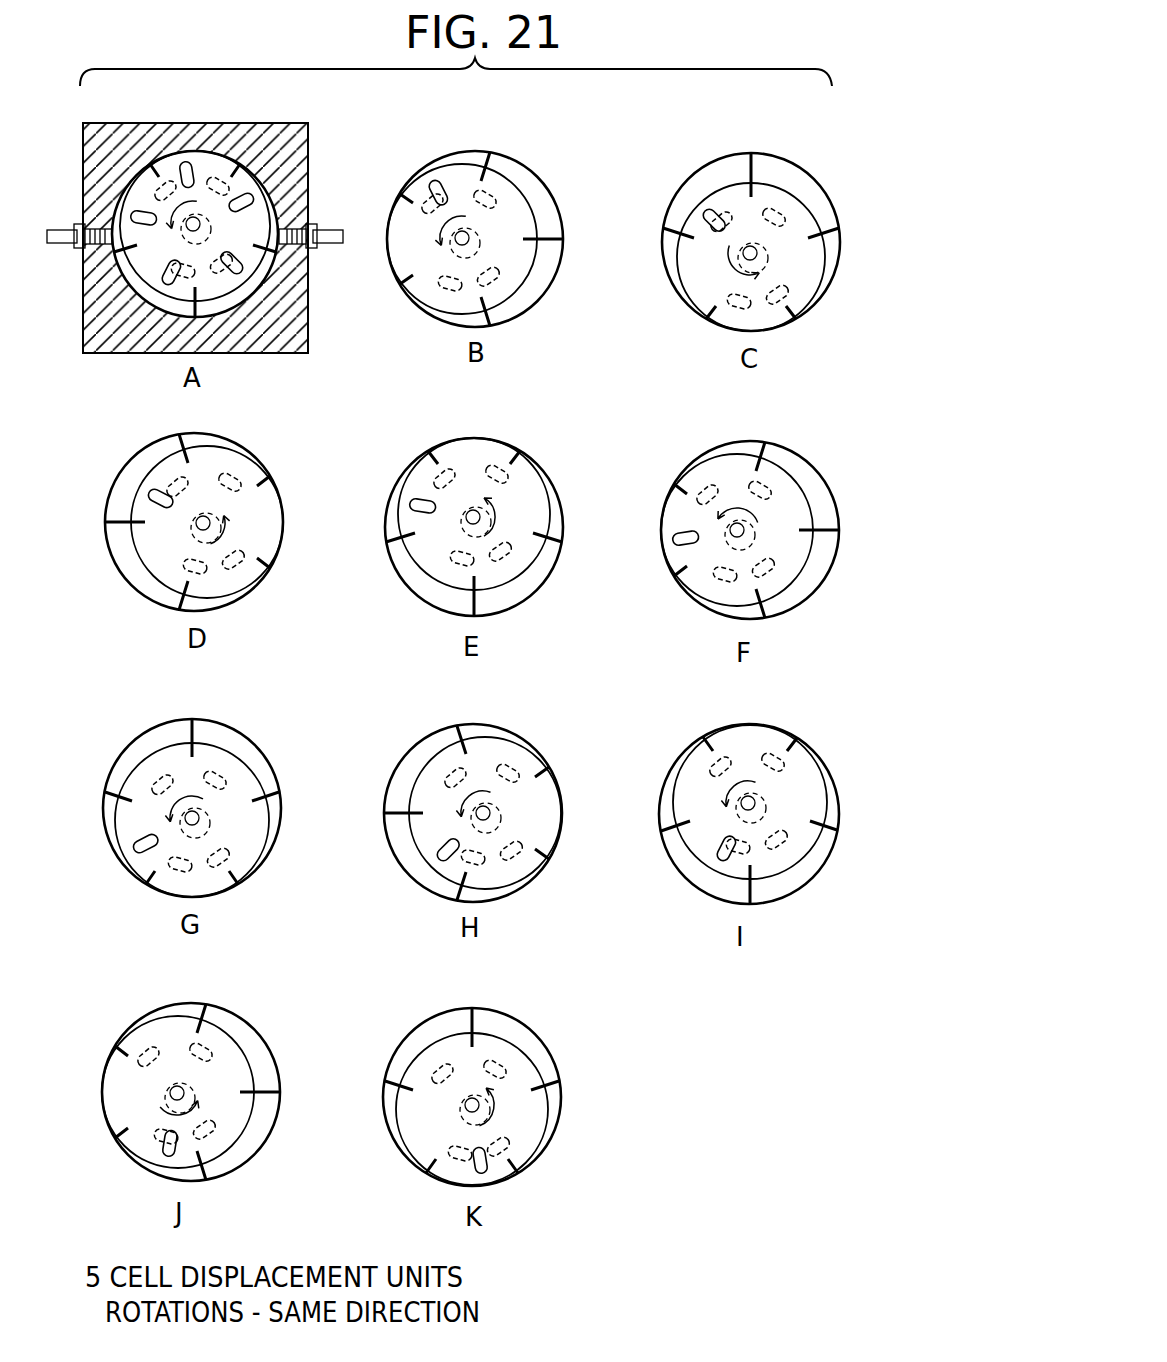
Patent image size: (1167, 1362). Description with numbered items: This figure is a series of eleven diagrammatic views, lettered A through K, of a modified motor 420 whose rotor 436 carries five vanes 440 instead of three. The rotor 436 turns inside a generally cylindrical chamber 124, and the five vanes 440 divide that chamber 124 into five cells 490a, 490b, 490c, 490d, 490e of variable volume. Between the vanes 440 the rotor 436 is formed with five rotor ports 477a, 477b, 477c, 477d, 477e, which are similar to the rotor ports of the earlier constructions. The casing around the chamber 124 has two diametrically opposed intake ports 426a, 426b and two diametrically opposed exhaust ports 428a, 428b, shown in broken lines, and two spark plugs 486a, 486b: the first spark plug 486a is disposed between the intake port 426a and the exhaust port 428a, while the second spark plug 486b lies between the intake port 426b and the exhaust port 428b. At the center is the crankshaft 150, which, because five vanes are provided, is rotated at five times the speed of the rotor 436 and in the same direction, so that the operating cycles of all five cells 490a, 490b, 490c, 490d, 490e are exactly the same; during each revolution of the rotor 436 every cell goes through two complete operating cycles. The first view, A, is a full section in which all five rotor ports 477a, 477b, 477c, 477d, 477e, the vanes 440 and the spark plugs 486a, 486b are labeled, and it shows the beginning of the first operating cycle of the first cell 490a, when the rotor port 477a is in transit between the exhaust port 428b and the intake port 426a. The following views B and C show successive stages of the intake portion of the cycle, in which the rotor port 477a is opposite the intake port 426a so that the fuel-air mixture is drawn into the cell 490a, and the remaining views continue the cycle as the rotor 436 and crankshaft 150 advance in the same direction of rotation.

The motor 420 is at (72, 85).
The chamber 124 is at (512, 312).
The crankshaft 150 is at (474, 236).
The intake port 426a is at (160, 185).
The intake port 426b is at (238, 284).
The exhaust port 428a is at (176, 282).
The exhaust port 428b is at (214, 176).
The rotor 436 is at (238, 325).
The vanes 440 is at (118, 250).
The rotor port 477a is at (186, 160).
The rotor port 477b is at (136, 212).
The rotor port 477c is at (168, 276).
The rotor port 477d is at (234, 258).
The rotor port 477e is at (248, 197).
The spark plug 486a is at (68, 228).
The spark plug 486b is at (324, 230).
The cell 490a is at (226, 152).
The cell 490b is at (127, 195).
The cell 490c is at (135, 270).
The cell 490d is at (258, 272).
The cell 490e is at (276, 190).